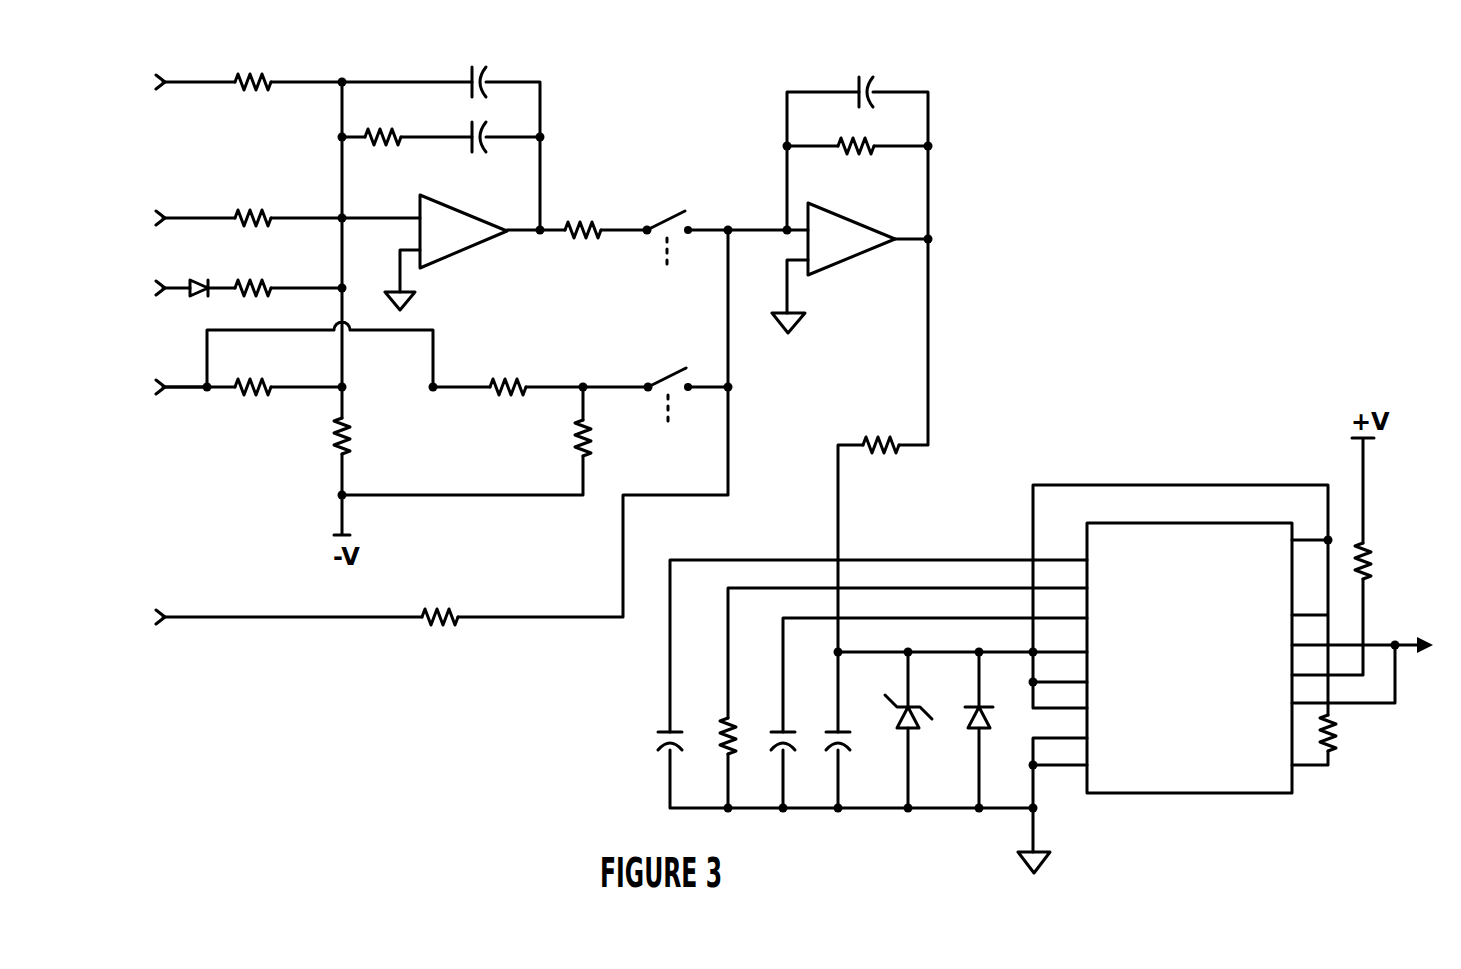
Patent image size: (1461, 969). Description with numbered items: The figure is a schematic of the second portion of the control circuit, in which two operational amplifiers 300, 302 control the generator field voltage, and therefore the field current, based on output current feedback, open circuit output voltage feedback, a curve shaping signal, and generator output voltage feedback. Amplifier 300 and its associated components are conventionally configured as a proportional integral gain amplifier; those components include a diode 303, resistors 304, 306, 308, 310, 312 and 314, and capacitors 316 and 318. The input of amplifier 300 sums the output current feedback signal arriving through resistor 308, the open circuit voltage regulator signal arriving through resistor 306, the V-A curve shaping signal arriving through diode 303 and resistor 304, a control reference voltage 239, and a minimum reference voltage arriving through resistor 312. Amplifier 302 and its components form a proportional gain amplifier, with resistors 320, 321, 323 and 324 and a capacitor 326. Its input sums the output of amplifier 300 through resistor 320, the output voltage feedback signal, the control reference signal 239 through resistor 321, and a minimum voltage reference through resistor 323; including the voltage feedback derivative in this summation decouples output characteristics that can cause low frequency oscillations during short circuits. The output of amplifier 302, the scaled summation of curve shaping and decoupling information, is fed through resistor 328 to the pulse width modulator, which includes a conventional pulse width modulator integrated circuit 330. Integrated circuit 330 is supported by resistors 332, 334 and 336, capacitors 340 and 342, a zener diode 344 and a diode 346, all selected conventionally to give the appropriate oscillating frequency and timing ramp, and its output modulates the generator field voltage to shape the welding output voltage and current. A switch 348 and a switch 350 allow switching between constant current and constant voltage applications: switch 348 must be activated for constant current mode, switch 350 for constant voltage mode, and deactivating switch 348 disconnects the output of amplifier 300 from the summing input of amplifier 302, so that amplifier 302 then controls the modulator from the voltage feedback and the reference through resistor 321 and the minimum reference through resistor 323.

The control reference voltage 239 is at (188, 390).
The operational amplifier 300 is at (465, 215).
The operational amplifier 302 is at (855, 228).
The diode 303 is at (191, 282).
The resistor 304 is at (268, 280).
The resistor 306 is at (268, 210).
The resistor 308 is at (268, 74).
The resistor 310 is at (470, 593).
The resistor 312 is at (354, 427).
The resistor 314 is at (395, 133).
The capacitor 316 is at (478, 130).
The capacitor 318 is at (478, 80).
The resistor 320 is at (592, 220).
The resistor 321 is at (521, 380).
The resistor 323 is at (595, 430).
The resistor 324 is at (870, 148).
The capacitor 326 is at (863, 80).
The resistor 328 is at (656, 736).
The pulse width modulator integrated circuit 330 is at (1185, 795).
The resistor 332 is at (716, 738).
The resistor 334 is at (1375, 573).
The resistor 336 is at (1340, 743).
The capacitor 340 is at (770, 738).
The capacitor 342 is at (826, 738).
The zener diode 344 is at (895, 728).
The diode 346 is at (965, 728).
The switch 348 is at (666, 220).
The switch 350 is at (667, 377).